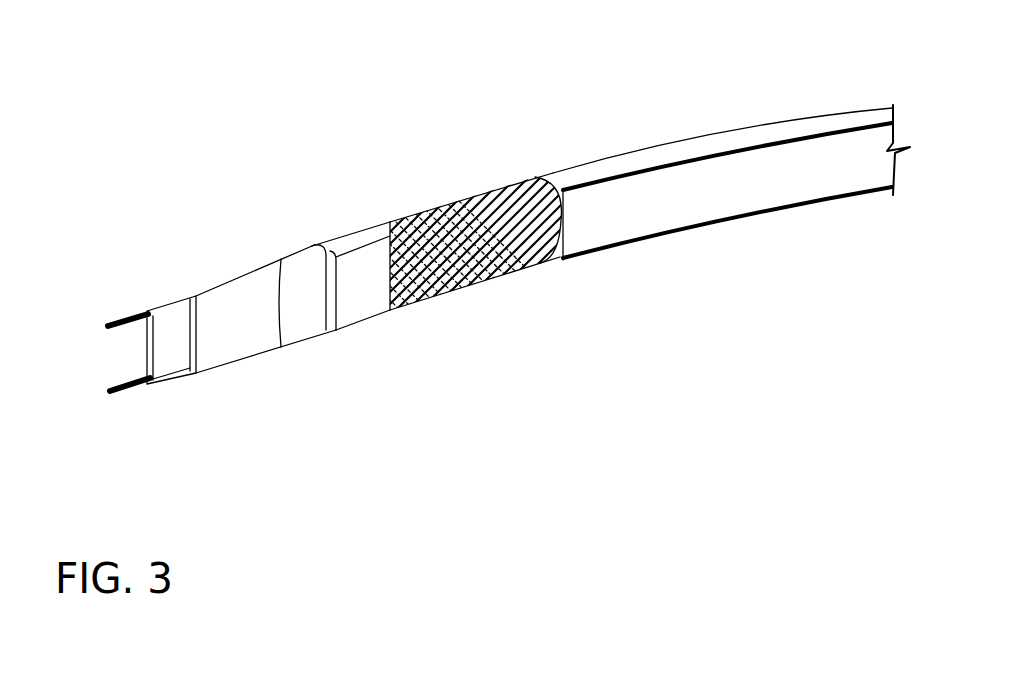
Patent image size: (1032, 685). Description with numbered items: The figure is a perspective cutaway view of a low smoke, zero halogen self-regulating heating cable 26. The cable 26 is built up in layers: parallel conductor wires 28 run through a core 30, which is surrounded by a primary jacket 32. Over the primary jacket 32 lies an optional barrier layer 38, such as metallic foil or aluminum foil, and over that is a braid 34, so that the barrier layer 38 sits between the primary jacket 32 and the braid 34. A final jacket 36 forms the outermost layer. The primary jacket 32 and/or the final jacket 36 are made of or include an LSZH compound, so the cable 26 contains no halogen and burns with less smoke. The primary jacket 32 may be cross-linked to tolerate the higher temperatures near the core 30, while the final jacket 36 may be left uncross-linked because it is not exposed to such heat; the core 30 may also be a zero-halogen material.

The cable 26 is at (628, 103).
The conductor wires 28 is at (108, 330).
The core 30 is at (172, 322).
The primary jacket 32 is at (237, 343).
The braid 34 is at (490, 277).
The final jacket 36 is at (368, 298).
The barrier layer 38 is at (300, 270).